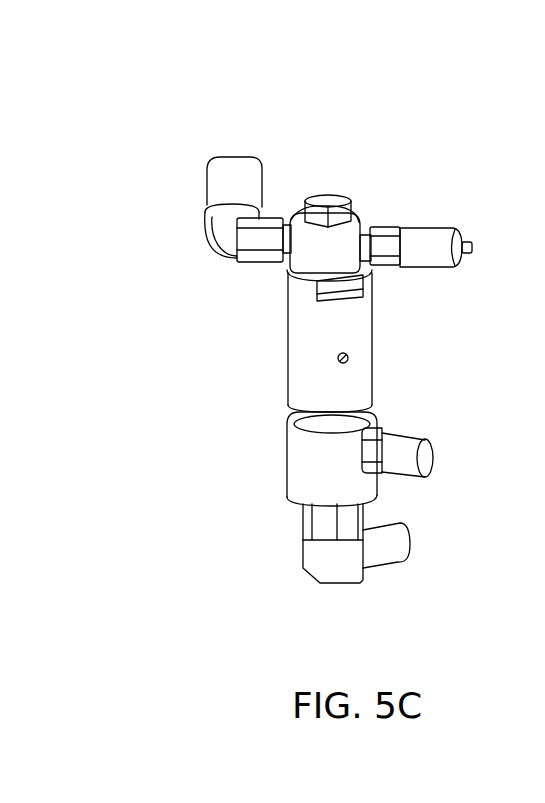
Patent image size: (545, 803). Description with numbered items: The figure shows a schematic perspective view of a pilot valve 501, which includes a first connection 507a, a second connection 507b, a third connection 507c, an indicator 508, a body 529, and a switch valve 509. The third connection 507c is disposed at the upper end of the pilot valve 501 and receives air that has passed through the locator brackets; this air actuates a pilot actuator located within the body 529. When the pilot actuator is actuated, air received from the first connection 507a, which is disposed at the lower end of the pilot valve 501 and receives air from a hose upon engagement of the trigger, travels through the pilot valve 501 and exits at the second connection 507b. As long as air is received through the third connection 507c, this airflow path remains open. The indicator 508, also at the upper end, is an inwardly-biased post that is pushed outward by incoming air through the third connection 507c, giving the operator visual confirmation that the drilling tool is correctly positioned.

The pilot valve 501 is at (333, 177).
The first connection 507a is at (380, 543).
The second connection 507b is at (395, 450).
The third connection 507c is at (223, 185).
The indicator 508 is at (423, 243).
The switch valve 509 is at (313, 468).
The body 529 is at (362, 327).